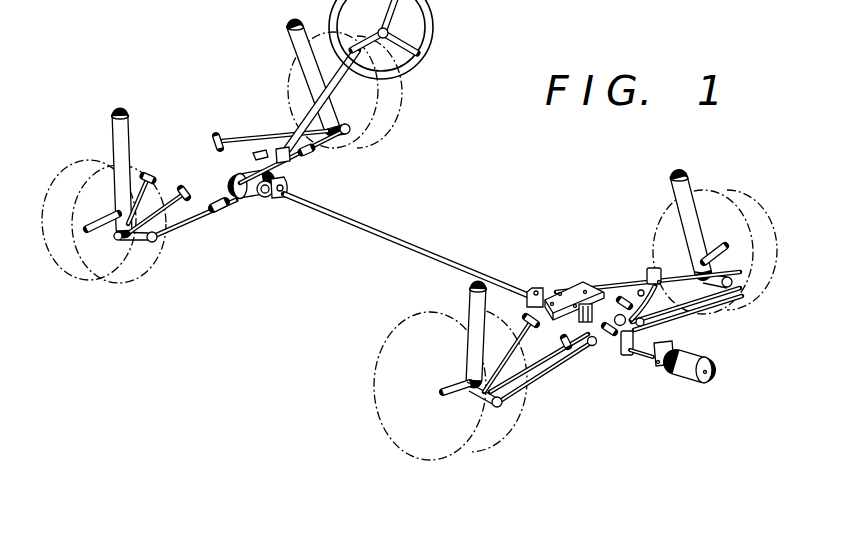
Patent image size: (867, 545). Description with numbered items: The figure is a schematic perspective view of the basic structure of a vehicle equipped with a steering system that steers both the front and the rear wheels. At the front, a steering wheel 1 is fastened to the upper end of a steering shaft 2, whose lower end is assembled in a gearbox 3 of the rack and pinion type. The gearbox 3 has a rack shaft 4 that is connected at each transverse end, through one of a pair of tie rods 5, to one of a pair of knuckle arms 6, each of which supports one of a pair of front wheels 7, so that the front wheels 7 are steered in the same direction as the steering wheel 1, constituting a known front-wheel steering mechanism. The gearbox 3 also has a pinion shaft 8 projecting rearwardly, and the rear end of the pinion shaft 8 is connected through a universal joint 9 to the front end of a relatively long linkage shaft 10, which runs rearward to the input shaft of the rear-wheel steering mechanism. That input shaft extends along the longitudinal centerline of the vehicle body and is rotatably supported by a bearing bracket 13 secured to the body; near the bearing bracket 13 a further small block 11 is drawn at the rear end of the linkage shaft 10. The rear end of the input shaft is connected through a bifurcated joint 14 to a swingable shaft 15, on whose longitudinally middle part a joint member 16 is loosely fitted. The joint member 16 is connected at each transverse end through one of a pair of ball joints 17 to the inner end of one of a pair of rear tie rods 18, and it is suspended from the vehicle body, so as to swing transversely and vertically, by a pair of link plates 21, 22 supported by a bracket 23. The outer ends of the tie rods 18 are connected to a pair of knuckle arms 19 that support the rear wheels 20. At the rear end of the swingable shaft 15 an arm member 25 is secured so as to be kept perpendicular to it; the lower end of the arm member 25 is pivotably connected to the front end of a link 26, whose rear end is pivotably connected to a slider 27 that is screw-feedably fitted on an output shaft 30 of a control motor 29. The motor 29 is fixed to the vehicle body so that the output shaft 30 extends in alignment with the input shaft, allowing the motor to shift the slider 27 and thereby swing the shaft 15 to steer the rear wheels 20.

The steering wheel 1 is at (431, 29).
The steering shaft 2 is at (395, 87).
The gearbox 3 is at (298, 174).
The rack shaft 4 is at (208, 215).
The tie rods 5 is at (312, 153).
The knuckle arms 6 is at (149, 242).
The front wheels 7 is at (90, 284).
The pinion shaft 8 is at (264, 200).
The universal joint 9 is at (285, 213).
The linkage shaft 10 is at (396, 237).
The rear pivot block 11 is at (538, 278).
The bearing bracket 13 is at (570, 290).
The bifurcated joint 14 is at (603, 290).
The swingable shaft 15 is at (616, 328).
The joint member 16 is at (612, 305).
The ball joints 17 is at (592, 346).
The tie rods 18 is at (545, 378).
The knuckle arms 19 is at (482, 400).
The rear wheels 20 is at (380, 340).
The link plate 21 is at (622, 355).
The link plate 22 is at (640, 289).
The bracket 23 is at (652, 267).
The arm member 25 is at (660, 336).
The link 26 is at (648, 360).
The slider 27 is at (675, 340).
The control motor 29 is at (694, 384).
The output shaft 30 is at (680, 372).